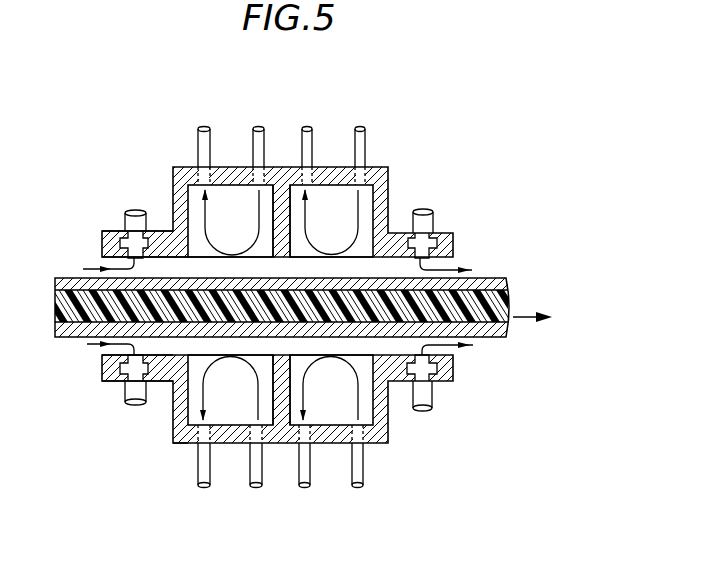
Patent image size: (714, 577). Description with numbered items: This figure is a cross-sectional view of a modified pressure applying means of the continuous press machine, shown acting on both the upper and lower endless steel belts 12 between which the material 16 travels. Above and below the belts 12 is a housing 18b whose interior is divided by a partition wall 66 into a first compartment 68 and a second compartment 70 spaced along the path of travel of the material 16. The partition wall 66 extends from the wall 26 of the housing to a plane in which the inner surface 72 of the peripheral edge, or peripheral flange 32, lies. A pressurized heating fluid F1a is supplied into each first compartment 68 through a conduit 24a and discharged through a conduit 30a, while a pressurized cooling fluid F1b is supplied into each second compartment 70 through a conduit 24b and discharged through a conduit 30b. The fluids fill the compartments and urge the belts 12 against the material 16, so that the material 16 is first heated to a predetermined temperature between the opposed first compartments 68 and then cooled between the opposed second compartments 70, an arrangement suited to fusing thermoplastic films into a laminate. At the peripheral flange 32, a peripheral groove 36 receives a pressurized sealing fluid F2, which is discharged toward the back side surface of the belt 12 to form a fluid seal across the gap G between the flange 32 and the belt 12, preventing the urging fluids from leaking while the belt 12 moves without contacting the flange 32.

The endless steel belt 12 is at (506, 279).
The material 16 is at (508, 306).
The housing 18b is at (388, 167).
The conduit 24a is at (265, 130).
The conduit 24b is at (366, 150).
The wall 26 is at (280, 173).
The conduit 30a is at (198, 152).
The conduit 30b is at (312, 150).
The peripheral flange 32 is at (113, 231).
The peripheral groove 36 is at (118, 246).
The partition wall 66 is at (283, 257).
The first compartment 68 is at (245, 230).
The second compartment 70 is at (347, 230).
The inner surface 72 is at (177, 257).
The pressurized heating fluid F1a is at (204, 118).
The pressurized cooling fluid F1b is at (307, 118).
The pressurized sealing fluid F2 is at (135, 197).
The gap G is at (98, 266).